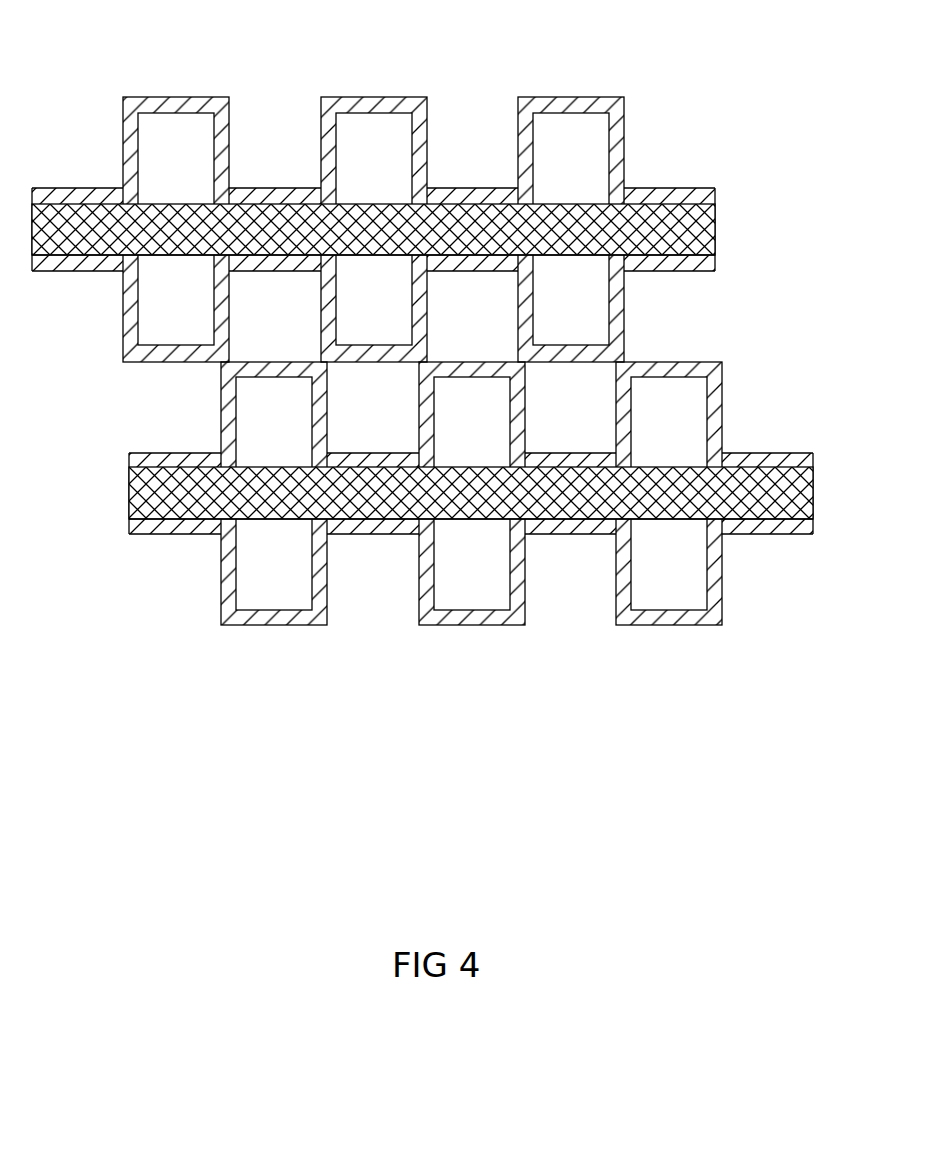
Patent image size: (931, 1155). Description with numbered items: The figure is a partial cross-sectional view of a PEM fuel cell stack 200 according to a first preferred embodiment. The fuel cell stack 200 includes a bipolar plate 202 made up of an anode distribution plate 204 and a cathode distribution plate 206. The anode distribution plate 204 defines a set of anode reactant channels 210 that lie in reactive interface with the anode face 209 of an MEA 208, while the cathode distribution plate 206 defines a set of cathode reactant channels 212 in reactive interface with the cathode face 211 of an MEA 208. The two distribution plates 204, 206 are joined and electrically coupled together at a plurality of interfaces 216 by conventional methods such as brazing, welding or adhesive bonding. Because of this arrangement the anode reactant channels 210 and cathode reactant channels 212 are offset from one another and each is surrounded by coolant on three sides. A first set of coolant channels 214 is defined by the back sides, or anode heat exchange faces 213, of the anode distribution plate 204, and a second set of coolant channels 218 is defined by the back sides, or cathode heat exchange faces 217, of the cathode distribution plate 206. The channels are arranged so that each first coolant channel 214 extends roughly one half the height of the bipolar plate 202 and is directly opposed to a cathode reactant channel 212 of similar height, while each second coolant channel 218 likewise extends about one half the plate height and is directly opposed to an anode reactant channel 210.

The PEM fuel cell stack 200 is at (441, 427).
The bipolar plate 202 is at (441, 353).
The anode distribution plate 204 is at (714, 268).
The cathode distribution plate 206 is at (738, 457).
The MEA 208 is at (692, 225).
The anode face 209 is at (577, 255).
The anode reactant channels 210 is at (373, 288).
The cathode face 211 is at (595, 202).
The cathode reactant channels 212 is at (177, 130).
The anode heat exchange faces 213 is at (320, 313).
The first set of coolant channels 214 is at (258, 282).
The interfaces 216 is at (320, 360).
The cathode heat exchange faces 217 is at (410, 410).
The second set of coolant channels 218 is at (372, 427).